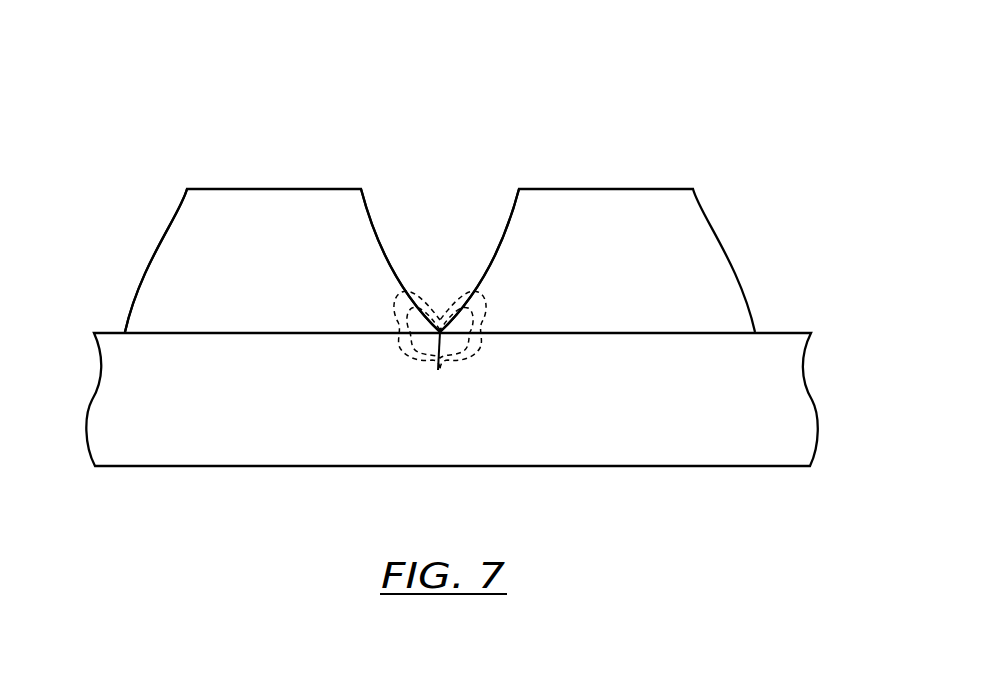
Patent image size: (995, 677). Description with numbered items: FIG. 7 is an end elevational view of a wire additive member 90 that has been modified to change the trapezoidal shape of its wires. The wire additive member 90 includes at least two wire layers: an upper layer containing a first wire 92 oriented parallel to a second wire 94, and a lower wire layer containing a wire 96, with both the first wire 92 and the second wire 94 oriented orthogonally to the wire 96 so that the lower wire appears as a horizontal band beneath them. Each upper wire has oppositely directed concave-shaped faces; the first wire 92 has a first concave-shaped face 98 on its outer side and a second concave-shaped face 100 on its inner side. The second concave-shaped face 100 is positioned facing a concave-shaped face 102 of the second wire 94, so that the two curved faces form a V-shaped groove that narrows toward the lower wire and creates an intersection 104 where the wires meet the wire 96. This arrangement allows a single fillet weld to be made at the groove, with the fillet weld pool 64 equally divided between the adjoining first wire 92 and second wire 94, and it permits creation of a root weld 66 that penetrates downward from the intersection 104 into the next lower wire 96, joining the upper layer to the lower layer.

The wire additive member 90 is at (668, 88).
The first wire 92 is at (251, 223).
The second wire 94 is at (617, 222).
The wire of a lower wire layer 96 is at (707, 443).
The first concave-shaped face 98 is at (152, 254).
The second concave-shaped face 100 is at (372, 211).
The concave-shaped face 102 is at (511, 211).
The fillet weld pool 64 is at (442, 310).
The root weld 66 is at (477, 353).
The intersection 104 is at (438, 370).